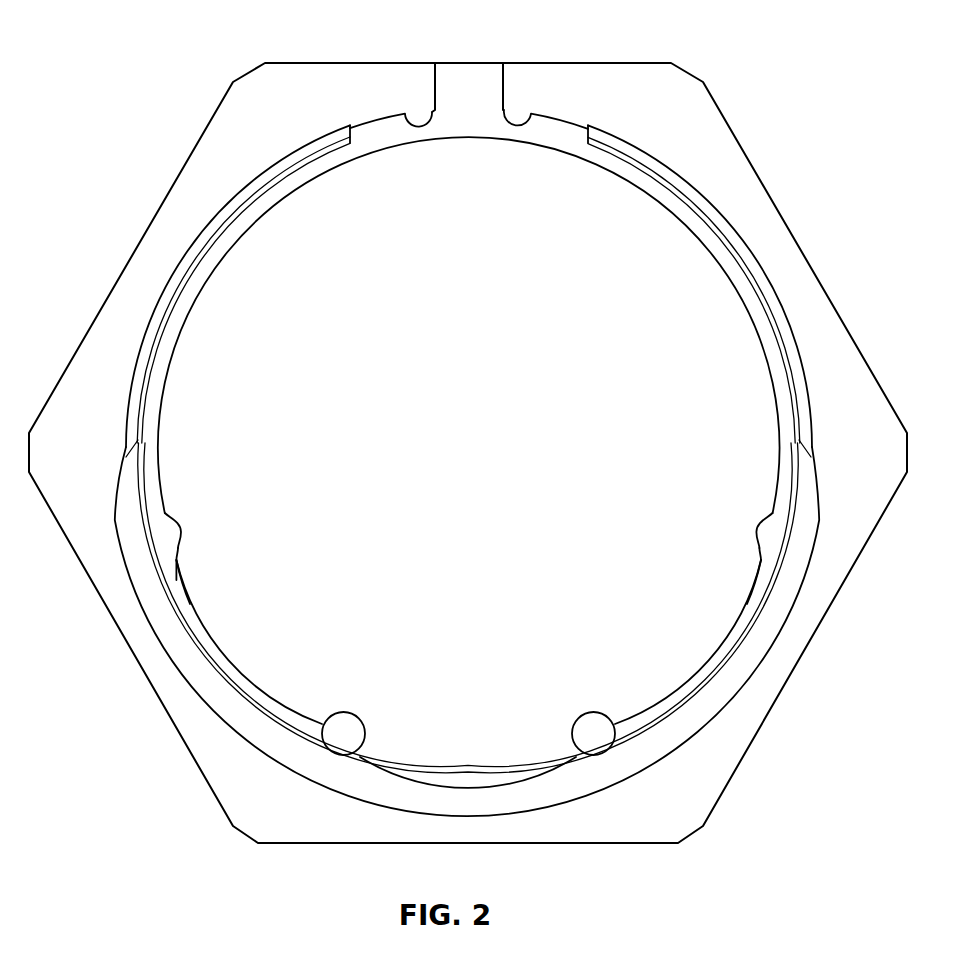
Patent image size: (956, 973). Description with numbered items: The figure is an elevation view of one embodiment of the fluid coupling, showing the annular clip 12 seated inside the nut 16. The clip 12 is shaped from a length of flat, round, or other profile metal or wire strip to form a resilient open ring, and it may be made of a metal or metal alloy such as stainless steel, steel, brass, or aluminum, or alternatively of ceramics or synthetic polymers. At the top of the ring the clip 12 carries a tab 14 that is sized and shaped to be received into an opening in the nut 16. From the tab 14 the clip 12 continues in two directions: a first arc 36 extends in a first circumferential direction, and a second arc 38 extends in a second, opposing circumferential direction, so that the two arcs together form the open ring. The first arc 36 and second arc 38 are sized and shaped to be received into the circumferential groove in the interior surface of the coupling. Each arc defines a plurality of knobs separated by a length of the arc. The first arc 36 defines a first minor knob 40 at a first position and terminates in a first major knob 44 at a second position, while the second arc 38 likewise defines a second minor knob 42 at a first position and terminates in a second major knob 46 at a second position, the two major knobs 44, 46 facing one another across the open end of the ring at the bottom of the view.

The annular clip 12 is at (698, 238).
The tab 14 is at (462, 73).
The nut 16 is at (131, 258).
The first arc 36 is at (185, 511).
The second arc 38 is at (752, 511).
The first minor knob 40 is at (178, 548).
The second minor knob 42 is at (759, 548).
The first major knob 44 is at (343, 722).
The second major knob 46 is at (593, 722).